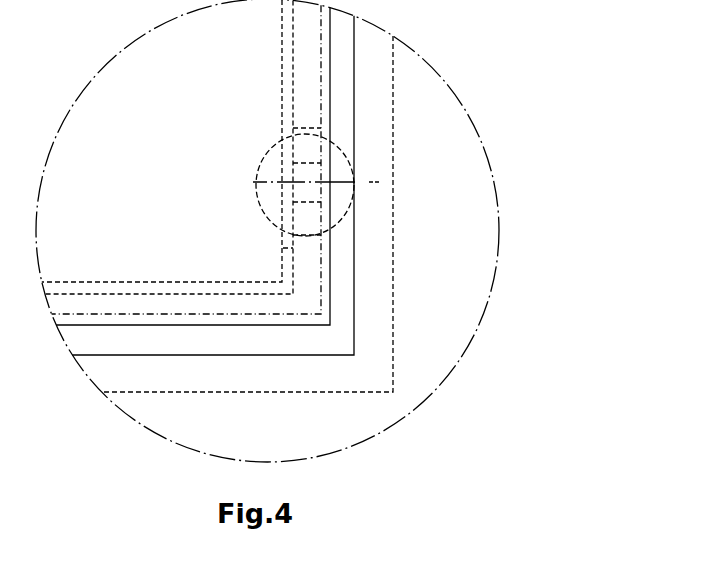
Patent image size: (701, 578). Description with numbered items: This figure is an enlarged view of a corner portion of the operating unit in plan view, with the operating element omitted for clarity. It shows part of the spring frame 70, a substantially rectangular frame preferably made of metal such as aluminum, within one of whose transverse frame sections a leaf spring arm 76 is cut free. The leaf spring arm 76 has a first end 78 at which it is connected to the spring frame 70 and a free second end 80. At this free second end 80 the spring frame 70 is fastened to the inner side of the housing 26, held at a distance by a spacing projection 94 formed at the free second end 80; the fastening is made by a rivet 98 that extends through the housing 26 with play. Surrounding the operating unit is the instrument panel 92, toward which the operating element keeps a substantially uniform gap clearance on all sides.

The housing 26 is at (370, 332).
The spring frame 70 is at (190, 282).
The leaf spring arm 76 is at (275, 80).
The first end 78 is at (302, 255).
The free second end 80 is at (273, 248).
The instrument panel 92 is at (462, 265).
The spacing projection 94 is at (305, 143).
The rivet 98 is at (273, 167).